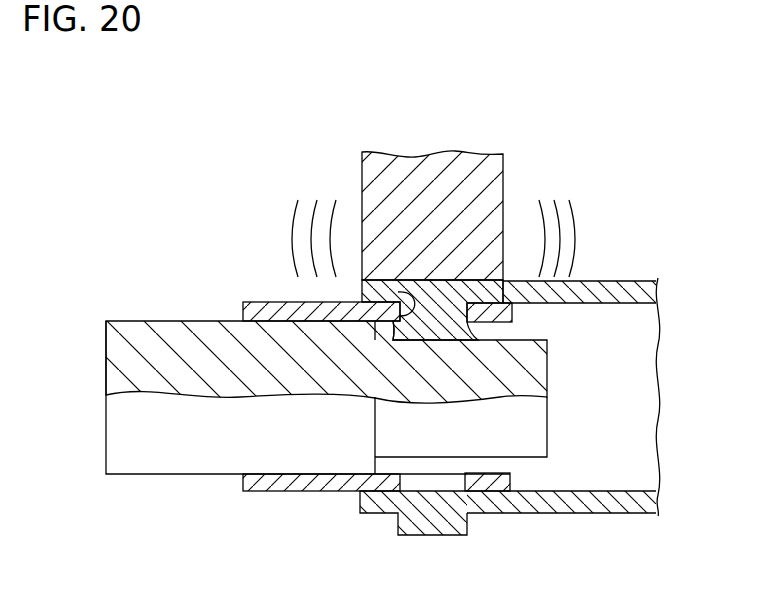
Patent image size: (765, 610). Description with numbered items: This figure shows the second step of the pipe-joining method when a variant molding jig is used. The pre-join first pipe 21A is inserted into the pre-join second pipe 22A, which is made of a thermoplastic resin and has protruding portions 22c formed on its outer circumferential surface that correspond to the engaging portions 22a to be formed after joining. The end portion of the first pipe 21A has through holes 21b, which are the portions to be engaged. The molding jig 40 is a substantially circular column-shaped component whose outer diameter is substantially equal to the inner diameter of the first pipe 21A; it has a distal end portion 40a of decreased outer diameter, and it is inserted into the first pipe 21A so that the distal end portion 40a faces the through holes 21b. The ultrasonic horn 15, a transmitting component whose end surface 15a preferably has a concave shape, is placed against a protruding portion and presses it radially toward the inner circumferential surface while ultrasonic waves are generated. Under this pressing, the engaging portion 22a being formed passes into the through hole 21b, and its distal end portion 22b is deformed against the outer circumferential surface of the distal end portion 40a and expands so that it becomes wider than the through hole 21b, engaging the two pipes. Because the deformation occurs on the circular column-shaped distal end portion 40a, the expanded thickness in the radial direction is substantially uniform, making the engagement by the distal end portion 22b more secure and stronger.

The ultrasonic horn 15 is at (503, 184).
The end surface of the ultrasonic horn 15a is at (512, 322).
The pre-join first pipe 21A is at (312, 492).
The through hole 21b is at (398, 294).
The engaging portion 22a is at (437, 321).
The distal end portion of the engaging portion 22b is at (548, 369).
The protruding portion 22c is at (450, 535).
The pre-join second pipe 22A is at (612, 513).
The molding jig 40 is at (130, 438).
The distal end portion of the molding jig 40a is at (531, 425).